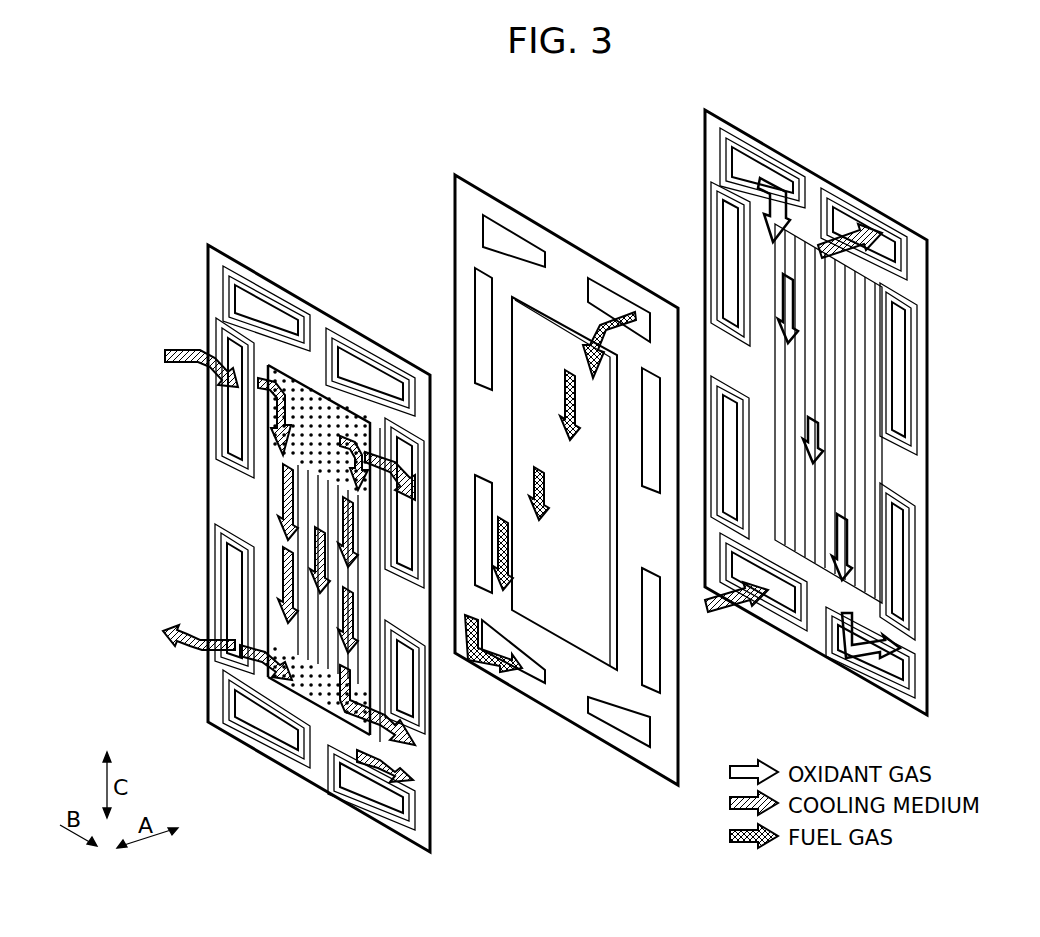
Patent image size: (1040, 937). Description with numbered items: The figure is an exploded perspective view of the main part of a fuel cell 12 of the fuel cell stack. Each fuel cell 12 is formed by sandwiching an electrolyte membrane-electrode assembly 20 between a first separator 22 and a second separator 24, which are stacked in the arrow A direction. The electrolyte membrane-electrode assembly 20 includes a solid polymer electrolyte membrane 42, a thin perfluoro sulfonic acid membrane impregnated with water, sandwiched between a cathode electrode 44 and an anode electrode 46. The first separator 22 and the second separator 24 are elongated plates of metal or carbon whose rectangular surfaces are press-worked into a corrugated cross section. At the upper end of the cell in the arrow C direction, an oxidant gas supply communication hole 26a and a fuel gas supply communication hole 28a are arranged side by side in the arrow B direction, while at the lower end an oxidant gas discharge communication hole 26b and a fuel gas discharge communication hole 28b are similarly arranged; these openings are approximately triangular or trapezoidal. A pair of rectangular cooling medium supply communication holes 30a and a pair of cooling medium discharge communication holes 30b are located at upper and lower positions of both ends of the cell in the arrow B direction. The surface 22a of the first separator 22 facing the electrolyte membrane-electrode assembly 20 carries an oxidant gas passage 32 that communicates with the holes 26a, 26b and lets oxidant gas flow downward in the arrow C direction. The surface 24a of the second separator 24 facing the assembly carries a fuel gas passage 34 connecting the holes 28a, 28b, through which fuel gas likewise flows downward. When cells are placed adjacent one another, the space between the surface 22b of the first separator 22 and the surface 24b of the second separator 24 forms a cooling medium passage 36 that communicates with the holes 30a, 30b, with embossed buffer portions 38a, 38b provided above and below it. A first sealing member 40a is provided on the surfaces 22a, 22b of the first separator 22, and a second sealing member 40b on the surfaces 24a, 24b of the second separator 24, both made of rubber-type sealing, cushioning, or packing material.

The fuel cell 12 is at (499, 97).
The electrolyte membrane-electrode assembly 20 is at (453, 179).
The first separator 22 is at (704, 138).
The surface of the first separator 22a is at (920, 656).
The surface of the first separator 22b is at (930, 692).
The second separator 24 is at (207, 246).
The surface of the second separator 24a is at (217, 703).
The surface of the second separator 24b is at (218, 677).
The oxidant gas supply communication hole 26a is at (267, 310).
The oxidant gas discharge communication hole 26b is at (375, 787).
The fuel gas supply communication hole 28a is at (356, 365).
The fuel gas discharge communication hole 28b is at (252, 715).
The cooling medium supply communication hole 30a is at (235, 412).
The cooling medium discharge communication hole 30b is at (232, 560).
The oxidant gas passage 32 is at (838, 462).
The fuel gas passage 34 is at (265, 530).
The cooling medium passage 36 is at (313, 608).
The buffer portion 38a is at (313, 400).
The buffer portion 38b is at (325, 735).
The first sealing member 40a is at (928, 272).
The second sealing member 40b is at (432, 803).
The solid polymer electrolyte membrane 42 is at (462, 245).
The cathode electrode 44 is at (523, 338).
The anode electrode 46 is at (510, 296).